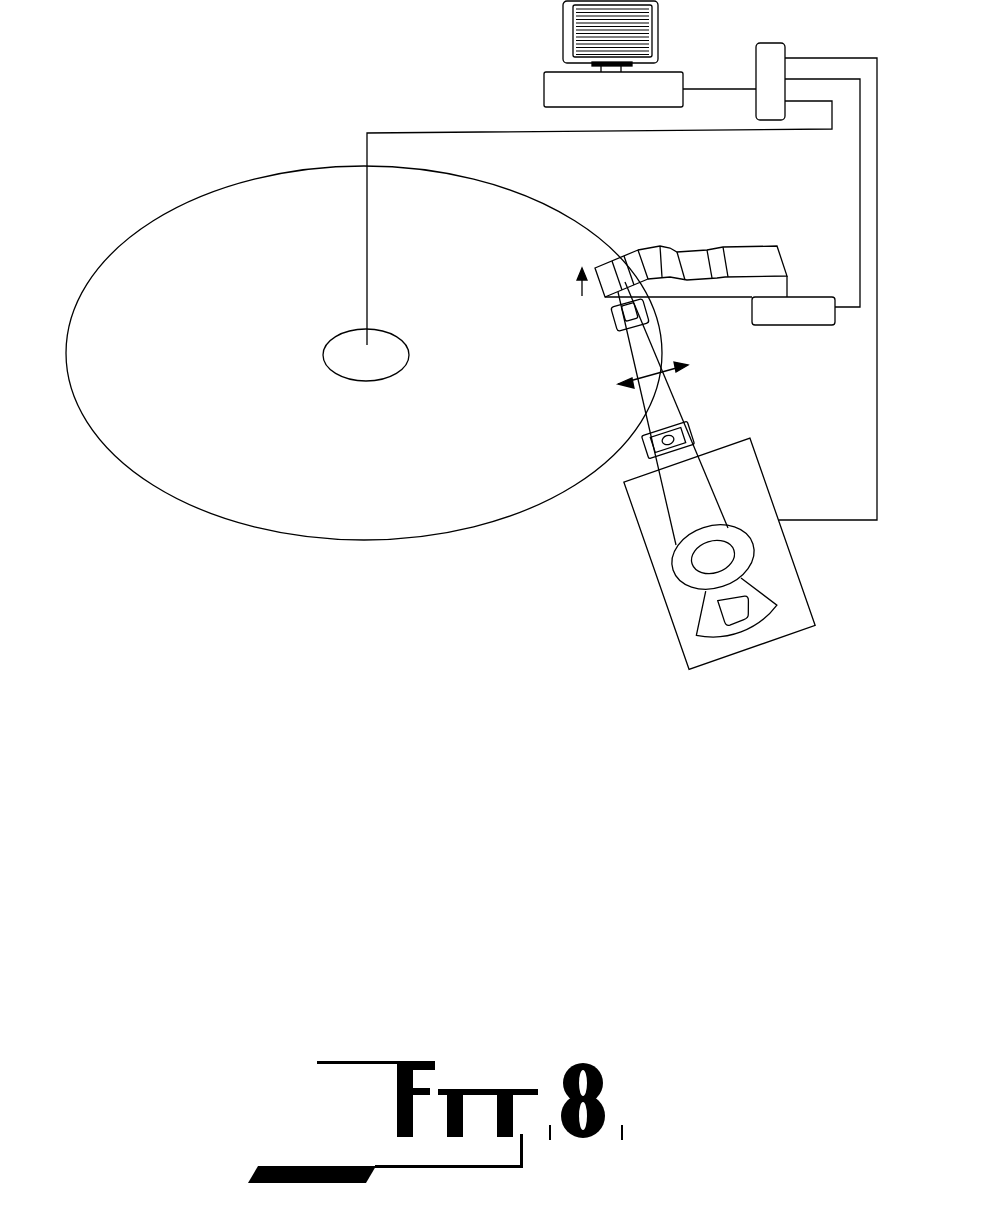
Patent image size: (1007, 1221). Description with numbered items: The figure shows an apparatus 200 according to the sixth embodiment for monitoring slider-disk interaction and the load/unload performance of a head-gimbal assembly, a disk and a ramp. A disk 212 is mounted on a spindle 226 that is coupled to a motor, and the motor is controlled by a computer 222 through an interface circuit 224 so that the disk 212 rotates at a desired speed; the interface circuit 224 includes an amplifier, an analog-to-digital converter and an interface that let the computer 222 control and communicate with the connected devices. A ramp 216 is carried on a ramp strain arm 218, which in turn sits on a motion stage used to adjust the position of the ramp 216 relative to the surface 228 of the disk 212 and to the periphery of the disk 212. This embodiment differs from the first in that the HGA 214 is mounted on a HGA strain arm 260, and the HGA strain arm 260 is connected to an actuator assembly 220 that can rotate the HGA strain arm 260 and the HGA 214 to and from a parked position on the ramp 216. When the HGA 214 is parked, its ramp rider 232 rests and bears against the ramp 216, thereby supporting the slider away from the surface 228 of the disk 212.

The apparatus 200 is at (146, 532).
The disk 212 is at (148, 228).
The HGA 214 is at (683, 392).
The ramp 216 is at (737, 245).
The ramp strain arm 218 is at (818, 295).
The actuator assembly 220 is at (652, 560).
The computer 222 is at (558, 42).
The interface circuit 224 is at (770, 42).
The spindle 226 is at (343, 328).
The surface 228 is at (422, 495).
The ramp rider 232 is at (613, 257).
The HGA strain arm 260 is at (697, 428).